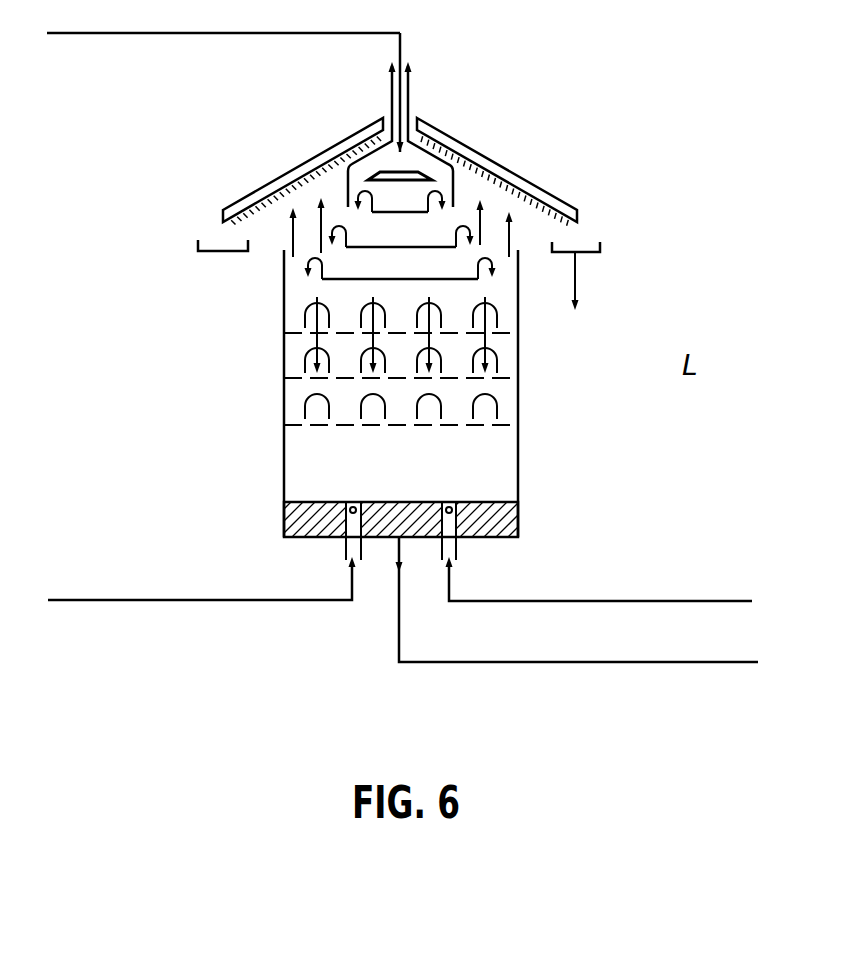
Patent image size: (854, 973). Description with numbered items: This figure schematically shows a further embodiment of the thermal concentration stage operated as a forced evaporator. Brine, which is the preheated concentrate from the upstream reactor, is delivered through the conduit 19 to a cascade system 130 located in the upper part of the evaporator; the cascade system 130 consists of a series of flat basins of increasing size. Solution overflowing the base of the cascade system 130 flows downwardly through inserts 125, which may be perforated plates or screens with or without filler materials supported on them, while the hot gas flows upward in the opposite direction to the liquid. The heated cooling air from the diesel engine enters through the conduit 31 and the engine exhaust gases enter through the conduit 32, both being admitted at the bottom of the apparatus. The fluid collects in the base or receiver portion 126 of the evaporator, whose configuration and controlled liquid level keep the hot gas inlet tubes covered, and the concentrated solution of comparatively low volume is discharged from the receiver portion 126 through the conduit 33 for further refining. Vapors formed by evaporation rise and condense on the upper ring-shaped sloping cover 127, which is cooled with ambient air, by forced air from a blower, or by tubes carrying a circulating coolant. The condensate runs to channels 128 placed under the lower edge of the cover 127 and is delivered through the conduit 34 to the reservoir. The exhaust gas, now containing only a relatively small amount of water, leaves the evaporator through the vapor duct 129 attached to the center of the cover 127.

The conduit 19 is at (190, 32).
The vapor duct 129 is at (409, 84).
The upper ring-shaped sloping cover 127 is at (455, 138).
The cascade system 130 is at (412, 243).
The channels 128 is at (603, 247).
The conduit 34 is at (588, 281).
The inserts 125 is at (497, 334).
The receiver portion 126 is at (518, 518).
The conduit 31 is at (155, 599).
The conduit 32 is at (688, 602).
The conduit 33 is at (695, 664).